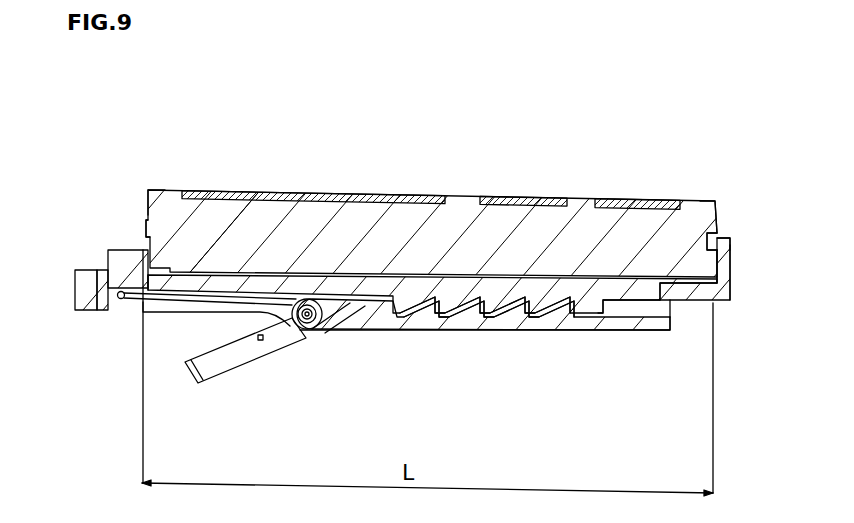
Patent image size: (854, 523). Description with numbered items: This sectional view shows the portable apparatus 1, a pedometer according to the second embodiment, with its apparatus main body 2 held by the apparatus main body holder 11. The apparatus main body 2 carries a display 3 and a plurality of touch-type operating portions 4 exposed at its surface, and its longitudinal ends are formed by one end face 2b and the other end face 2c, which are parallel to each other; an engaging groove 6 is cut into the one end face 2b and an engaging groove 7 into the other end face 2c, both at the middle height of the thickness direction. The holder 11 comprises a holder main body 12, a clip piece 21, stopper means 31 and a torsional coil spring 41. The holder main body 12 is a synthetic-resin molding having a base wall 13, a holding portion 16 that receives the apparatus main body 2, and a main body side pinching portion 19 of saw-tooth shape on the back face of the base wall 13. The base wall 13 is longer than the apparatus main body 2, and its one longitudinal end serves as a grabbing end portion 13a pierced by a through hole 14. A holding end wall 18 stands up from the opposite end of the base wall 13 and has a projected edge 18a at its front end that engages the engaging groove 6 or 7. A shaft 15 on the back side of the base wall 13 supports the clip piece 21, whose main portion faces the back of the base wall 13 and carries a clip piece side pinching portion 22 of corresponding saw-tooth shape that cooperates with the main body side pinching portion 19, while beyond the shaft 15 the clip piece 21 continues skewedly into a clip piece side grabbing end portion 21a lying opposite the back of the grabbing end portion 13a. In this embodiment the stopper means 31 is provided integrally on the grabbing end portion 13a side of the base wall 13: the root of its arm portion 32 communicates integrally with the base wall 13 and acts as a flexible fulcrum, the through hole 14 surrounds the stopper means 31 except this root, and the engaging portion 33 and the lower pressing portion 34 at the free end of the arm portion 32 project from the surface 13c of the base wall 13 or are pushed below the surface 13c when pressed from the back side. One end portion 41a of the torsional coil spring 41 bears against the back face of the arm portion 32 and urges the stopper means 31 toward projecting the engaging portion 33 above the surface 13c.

The portable apparatus 1 is at (678, 307).
The apparatus main body 2 is at (465, 192).
The one end face 2b is at (717, 203).
The other end face 2c is at (147, 205).
The display 3 is at (317, 195).
The operating portions 4 is at (545, 196).
The engaging groove 6 is at (707, 235).
The engaging groove 7 is at (148, 227).
The apparatus main body holder 11 is at (335, 310).
The holder main body 12 is at (732, 300).
The base wall 13 is at (362, 287).
The grabbing end portion 13a is at (76, 290).
The surface of the base wall 13c is at (590, 283).
The through hole 14 is at (100, 302).
The shaft 15 is at (311, 328).
The holding portion 16 is at (718, 278).
The holding end wall 18 is at (722, 275).
The projected edge 18a is at (718, 240).
The main body side pinching portion 19 is at (572, 308).
The clip piece 21 is at (467, 327).
The clip piece side grabbing end portion 21a is at (195, 378).
The clip piece side pinching portion 22 is at (555, 313).
The stopper means 31 is at (112, 294).
The arm portion 32 is at (193, 282).
The engaging portion 33 is at (125, 258).
The pressing portion 34 is at (221, 236).
The torsional coil spring 41 is at (302, 328).
The one end portion of the torsional coil spring 41a is at (148, 296).